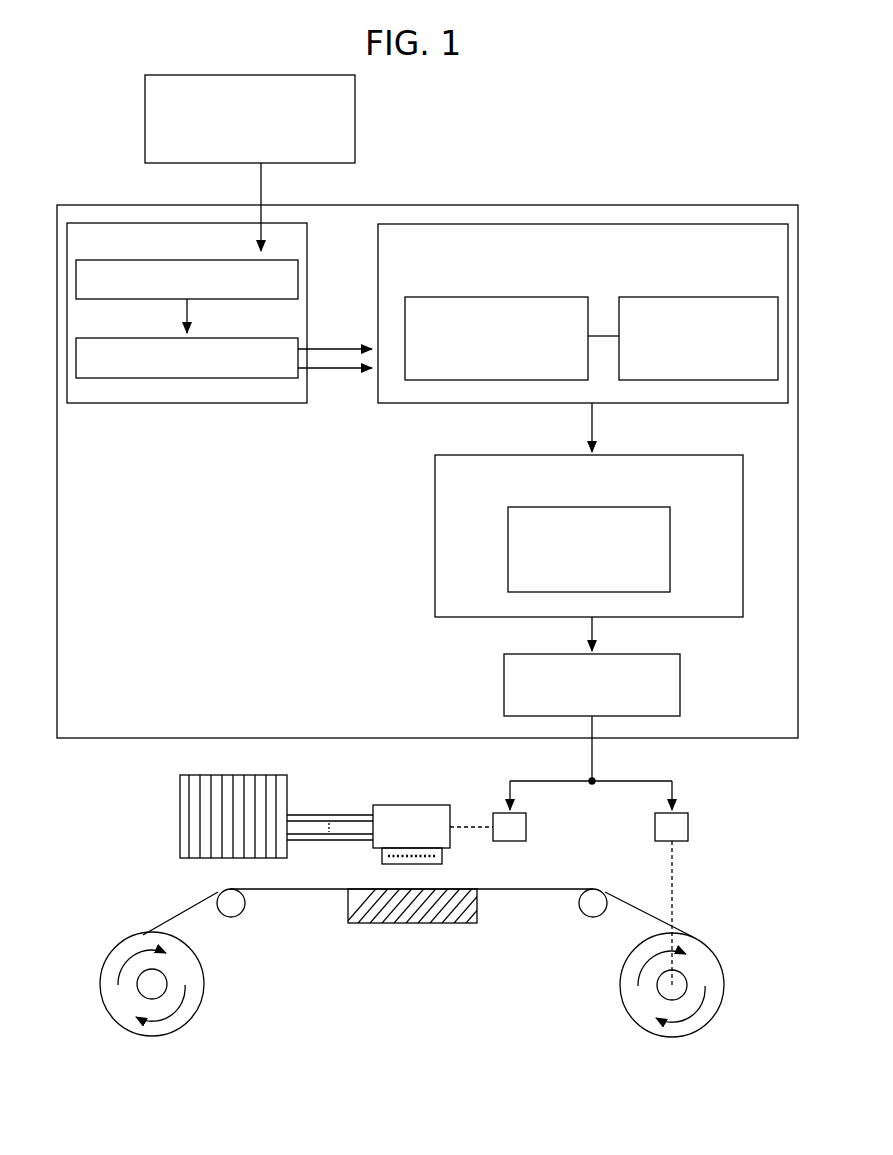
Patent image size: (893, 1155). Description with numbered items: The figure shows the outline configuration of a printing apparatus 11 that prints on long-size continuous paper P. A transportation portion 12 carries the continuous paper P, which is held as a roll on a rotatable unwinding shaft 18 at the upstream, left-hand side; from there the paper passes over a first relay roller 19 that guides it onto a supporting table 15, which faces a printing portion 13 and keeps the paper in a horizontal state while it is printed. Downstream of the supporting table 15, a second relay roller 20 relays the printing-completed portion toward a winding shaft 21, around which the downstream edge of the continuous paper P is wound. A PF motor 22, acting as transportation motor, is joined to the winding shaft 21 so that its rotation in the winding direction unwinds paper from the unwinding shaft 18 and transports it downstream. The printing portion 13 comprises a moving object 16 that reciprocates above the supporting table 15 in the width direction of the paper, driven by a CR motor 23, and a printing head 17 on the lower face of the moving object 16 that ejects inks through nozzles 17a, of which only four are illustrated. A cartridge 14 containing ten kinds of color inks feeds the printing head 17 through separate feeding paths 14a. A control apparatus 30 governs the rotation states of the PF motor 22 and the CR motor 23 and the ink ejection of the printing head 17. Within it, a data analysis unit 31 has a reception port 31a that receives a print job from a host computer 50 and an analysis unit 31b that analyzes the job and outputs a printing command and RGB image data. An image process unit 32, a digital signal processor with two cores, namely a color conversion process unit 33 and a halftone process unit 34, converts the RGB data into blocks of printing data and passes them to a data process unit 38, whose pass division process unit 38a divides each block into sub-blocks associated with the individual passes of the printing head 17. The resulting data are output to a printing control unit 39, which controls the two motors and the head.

The printing apparatus 11 is at (736, 134).
The host computer 50 is at (145, 122).
The control apparatus 30 is at (405, 205).
The data analysis unit 31 is at (228, 405).
The reception port 31a is at (76, 284).
The analysis unit 31b is at (76, 362).
The image process unit 32 is at (378, 286).
The color conversion process unit 33 is at (480, 295).
The halftone process unit 34 is at (655, 295).
The data process unit 38 is at (435, 537).
The pass division process unit 38a is at (670, 548).
The printing control unit 39 is at (680, 685).
The transportation portion 12 is at (148, 902).
The printing portion 13 is at (470, 798).
The cartridge 14 is at (180, 817).
The feeding paths 14a is at (329, 813).
The supporting table 15 is at (412, 923).
The moving object 16 is at (412, 805).
The printing head 17 is at (442, 855).
The nozzles 17a is at (382, 853).
The unwinding shaft 18 is at (150, 1036).
The first relay roller 19 is at (233, 910).
The second relay roller 20 is at (592, 910).
The winding shaft 21 is at (660, 989).
The PF motor 22 is at (688, 827).
The CR motor 23 is at (526, 827).
The continuous paper P is at (300, 891).